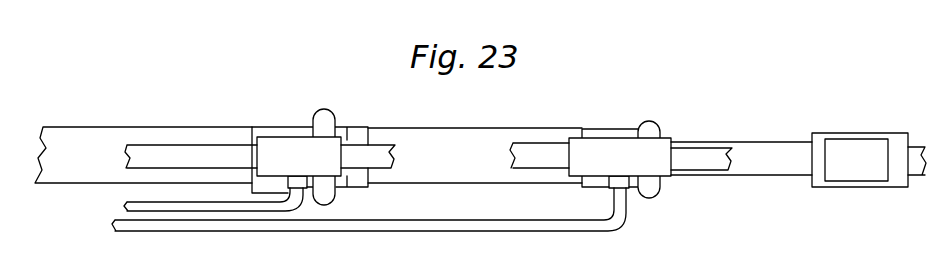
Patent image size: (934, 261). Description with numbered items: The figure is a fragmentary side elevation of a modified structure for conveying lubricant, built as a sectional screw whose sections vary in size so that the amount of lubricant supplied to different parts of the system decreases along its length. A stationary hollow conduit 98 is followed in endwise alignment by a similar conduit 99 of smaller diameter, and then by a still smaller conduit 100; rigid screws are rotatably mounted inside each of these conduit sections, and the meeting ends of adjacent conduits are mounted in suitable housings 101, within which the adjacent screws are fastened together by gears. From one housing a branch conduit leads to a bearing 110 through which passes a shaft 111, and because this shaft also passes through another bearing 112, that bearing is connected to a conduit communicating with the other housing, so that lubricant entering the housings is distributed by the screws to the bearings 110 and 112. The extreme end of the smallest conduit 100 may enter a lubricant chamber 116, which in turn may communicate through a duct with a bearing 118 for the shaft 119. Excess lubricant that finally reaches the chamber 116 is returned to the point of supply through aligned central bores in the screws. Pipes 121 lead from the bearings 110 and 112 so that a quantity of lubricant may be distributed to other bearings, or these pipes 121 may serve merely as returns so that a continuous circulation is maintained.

The stationary hollow conduit 98 is at (147, 132).
The conduit 99 is at (418, 130).
The conduit 100 is at (765, 140).
The housing 101 is at (277, 128).
The bearing 110 is at (270, 147).
The shaft 111 is at (218, 148).
The bearing 112 is at (663, 168).
The lubricant chamber 116 is at (847, 170).
The bearing 118 is at (895, 134).
The shaft 119 is at (917, 176).
The pipes 121 is at (243, 212).